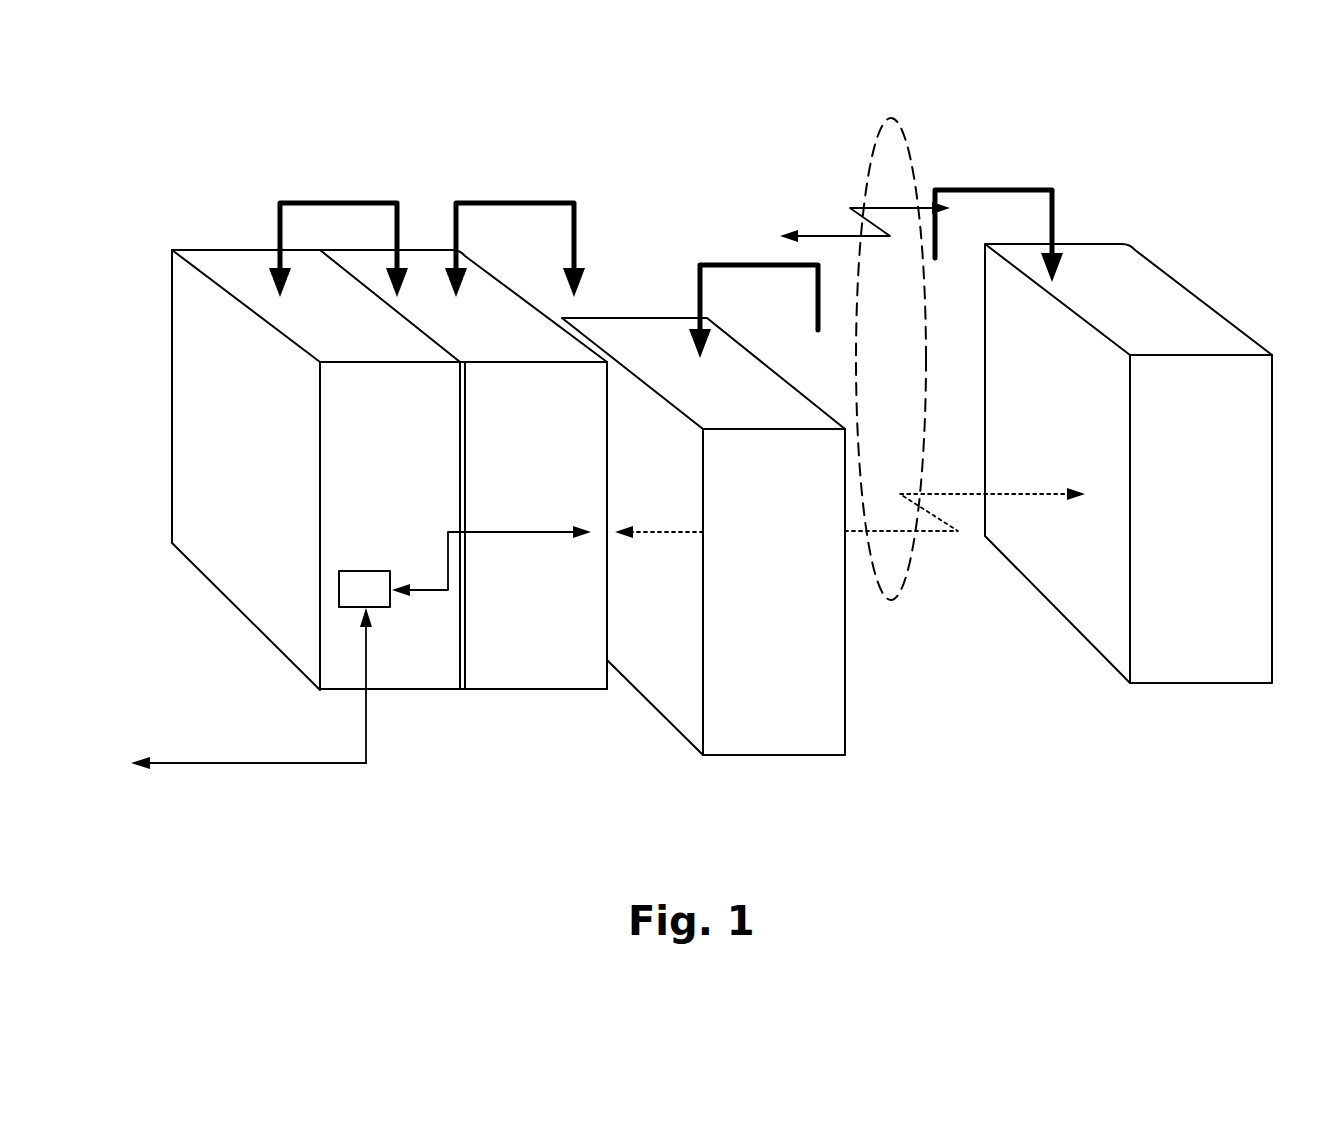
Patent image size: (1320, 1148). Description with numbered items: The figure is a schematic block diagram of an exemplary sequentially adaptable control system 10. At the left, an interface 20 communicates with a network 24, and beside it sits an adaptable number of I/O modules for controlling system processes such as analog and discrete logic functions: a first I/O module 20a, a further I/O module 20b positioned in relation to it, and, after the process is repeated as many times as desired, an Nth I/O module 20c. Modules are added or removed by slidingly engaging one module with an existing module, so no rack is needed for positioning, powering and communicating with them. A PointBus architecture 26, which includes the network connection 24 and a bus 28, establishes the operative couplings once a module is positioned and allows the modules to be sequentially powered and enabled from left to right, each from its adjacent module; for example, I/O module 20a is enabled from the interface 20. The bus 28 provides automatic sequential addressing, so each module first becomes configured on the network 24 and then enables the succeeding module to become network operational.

The system 10 is at (1066, 102).
The interface 20 is at (217, 560).
The I/O module 20a is at (557, 673).
The I/O module 20b is at (790, 745).
The Nth I/O module 20c is at (1200, 672).
The network 24 is at (320, 765).
The PointBus architecture 26 is at (907, 577).
The bus 28 is at (327, 203).